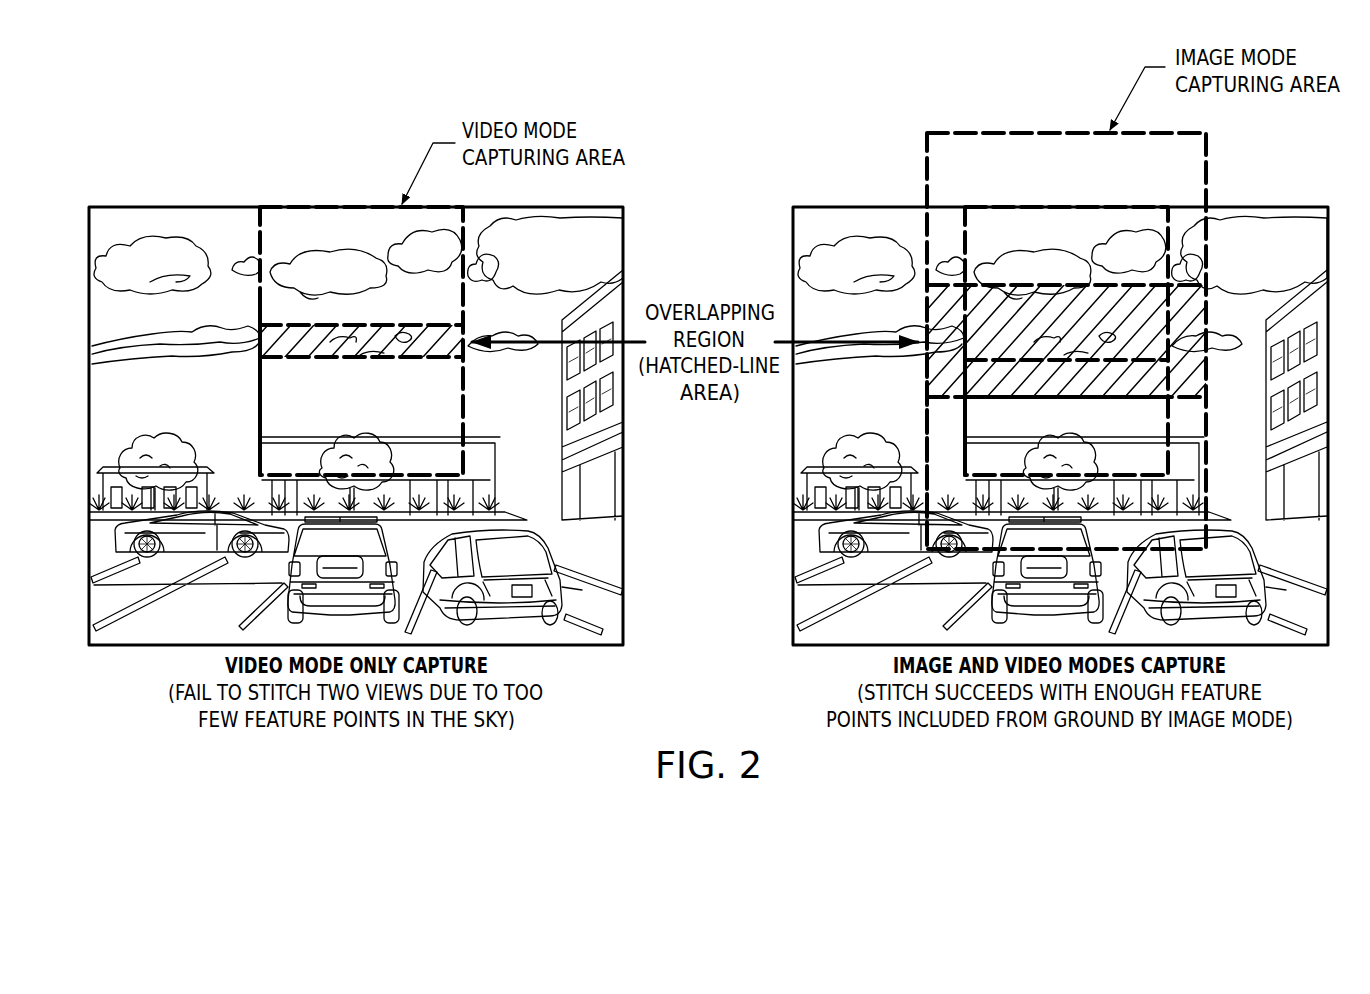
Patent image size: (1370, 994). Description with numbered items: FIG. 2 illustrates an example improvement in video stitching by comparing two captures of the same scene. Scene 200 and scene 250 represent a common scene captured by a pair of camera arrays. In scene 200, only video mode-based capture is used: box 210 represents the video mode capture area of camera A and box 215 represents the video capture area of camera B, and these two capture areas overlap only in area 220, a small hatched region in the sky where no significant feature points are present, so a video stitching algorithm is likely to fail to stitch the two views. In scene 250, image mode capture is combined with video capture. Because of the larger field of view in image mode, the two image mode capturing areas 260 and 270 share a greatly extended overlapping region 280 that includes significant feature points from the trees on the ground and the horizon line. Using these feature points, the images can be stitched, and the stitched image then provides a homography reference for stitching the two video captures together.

The scene 200 is at (163, 205).
The box 210 is at (320, 205).
The box 215 is at (258, 401).
The area 220 is at (375, 357).
The scene 250 is at (1275, 205).
The image mode capturing area 260 is at (925, 183).
The image mode capturing area 270 is at (925, 430).
The overlapping region 280 is at (1110, 390).